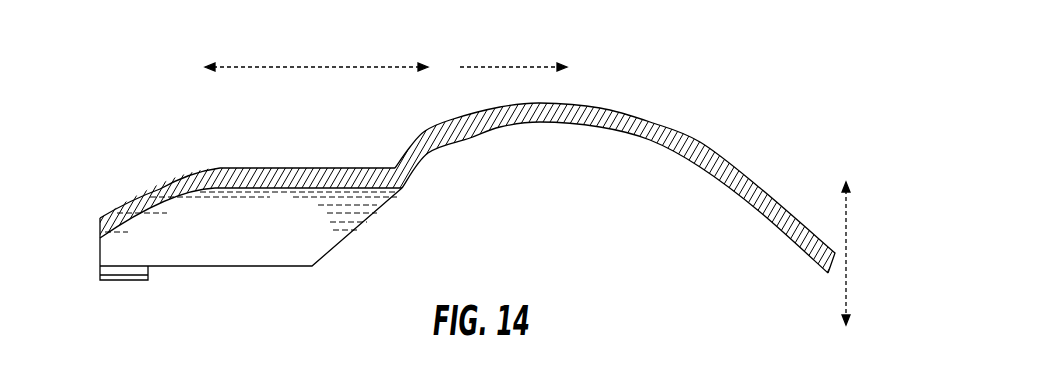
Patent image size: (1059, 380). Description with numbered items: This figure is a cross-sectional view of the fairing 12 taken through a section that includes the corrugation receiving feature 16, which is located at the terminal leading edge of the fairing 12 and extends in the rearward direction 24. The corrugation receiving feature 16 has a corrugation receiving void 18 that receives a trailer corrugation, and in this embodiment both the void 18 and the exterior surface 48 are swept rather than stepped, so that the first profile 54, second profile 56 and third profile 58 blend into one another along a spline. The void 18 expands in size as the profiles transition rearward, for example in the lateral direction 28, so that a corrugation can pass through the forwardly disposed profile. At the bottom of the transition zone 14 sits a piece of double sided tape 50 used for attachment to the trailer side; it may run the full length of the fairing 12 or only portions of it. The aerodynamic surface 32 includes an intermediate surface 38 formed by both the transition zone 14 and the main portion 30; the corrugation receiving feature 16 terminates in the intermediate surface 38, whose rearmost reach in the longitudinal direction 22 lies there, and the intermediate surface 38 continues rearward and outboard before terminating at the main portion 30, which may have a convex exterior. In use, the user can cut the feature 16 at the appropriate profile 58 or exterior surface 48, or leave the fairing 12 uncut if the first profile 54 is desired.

The fairing 12 is at (697, 146).
The transition zone 14 is at (293, 168).
The corrugation receiving feature 16 is at (115, 210).
The corrugation receiving void 18 is at (192, 268).
The longitudinal direction 22 is at (317, 67).
The rearward direction 24 is at (515, 67).
The lateral direction 28 is at (847, 252).
The main portion 30 is at (597, 112).
The aerodynamic surface 32 is at (430, 125).
The intermediate surface 38 is at (398, 163).
The exterior surface 48 is at (190, 165).
The double sided tape 50 is at (125, 283).
The first profile 54 is at (100, 221).
The second profile 56 is at (150, 189).
The third profile 58 is at (238, 168).